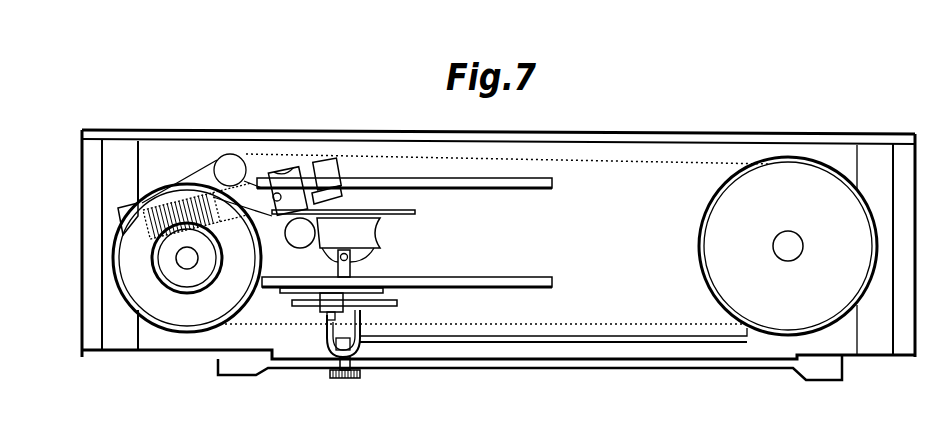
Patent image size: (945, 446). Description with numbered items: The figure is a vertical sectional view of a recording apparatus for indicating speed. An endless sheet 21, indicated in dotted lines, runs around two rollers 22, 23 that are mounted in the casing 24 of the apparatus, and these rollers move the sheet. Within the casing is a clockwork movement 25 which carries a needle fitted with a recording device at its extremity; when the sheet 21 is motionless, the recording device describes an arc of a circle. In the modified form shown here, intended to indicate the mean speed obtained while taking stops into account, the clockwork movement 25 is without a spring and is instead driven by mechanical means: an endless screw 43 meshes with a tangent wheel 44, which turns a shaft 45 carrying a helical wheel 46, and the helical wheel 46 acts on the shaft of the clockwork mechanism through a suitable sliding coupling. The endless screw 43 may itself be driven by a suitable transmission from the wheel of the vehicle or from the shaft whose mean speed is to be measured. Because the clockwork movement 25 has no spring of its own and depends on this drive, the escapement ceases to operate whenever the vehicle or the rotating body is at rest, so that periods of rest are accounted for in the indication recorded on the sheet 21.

The endless sheet 21 is at (543, 158).
The roller 22 is at (852, 268).
The roller 23 is at (133, 260).
The casing 24 is at (736, 143).
The clockwork movement 25 is at (523, 282).
The endless screw 43 is at (187, 218).
The tangent wheel 44 is at (292, 195).
The shaft 45 is at (300, 233).
The helical wheel 46 is at (360, 233).